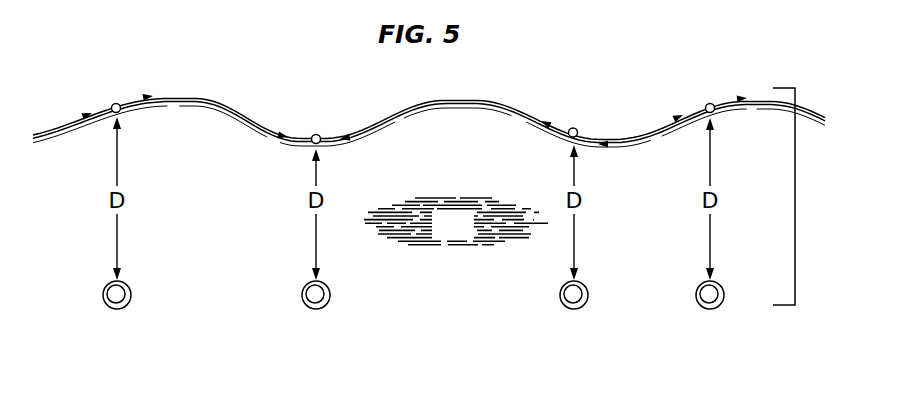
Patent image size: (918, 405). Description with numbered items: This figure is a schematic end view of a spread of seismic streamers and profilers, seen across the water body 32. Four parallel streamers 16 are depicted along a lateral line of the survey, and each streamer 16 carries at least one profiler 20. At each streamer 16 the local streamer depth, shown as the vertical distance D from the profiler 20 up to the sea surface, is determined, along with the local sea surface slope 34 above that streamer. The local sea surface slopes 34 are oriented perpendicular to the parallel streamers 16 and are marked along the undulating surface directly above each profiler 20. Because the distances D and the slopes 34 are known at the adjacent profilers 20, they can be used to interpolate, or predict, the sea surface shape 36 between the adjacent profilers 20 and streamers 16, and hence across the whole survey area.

The local sea surface slope 34 is at (394, 101).
The streamer 16 is at (401, 320).
The profiler 20 is at (428, 322).
The water body 32 is at (470, 236).
The sea surface shape 36 is at (795, 197).